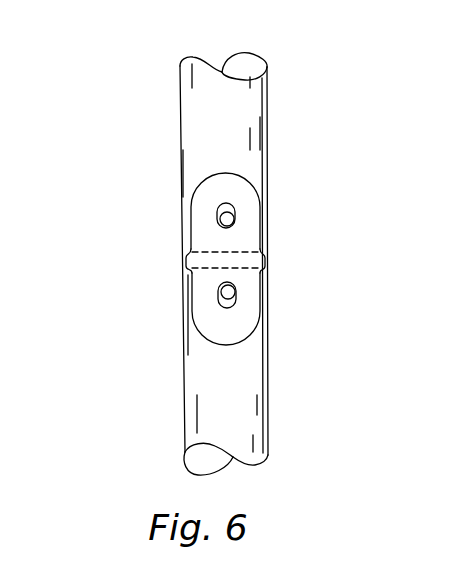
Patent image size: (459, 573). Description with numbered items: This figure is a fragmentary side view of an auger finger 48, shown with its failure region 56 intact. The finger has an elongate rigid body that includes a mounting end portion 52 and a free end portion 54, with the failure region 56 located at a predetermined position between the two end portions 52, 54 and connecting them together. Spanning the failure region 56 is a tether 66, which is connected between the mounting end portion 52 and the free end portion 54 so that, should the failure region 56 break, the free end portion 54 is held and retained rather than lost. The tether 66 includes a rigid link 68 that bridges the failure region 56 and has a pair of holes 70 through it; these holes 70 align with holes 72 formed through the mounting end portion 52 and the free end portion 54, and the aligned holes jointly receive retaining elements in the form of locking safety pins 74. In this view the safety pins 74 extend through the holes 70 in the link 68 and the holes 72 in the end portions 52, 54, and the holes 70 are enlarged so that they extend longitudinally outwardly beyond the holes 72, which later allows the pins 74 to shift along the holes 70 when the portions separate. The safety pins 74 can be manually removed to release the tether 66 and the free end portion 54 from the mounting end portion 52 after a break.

The auger finger 48 is at (268, 62).
The mounting end portion 52 is at (268, 112).
The free end portion 54 is at (268, 441).
The failure region 56 is at (267, 262).
The tether 66 is at (262, 209).
The rigid link 68 is at (192, 298).
The holes 70 is at (217, 210).
The holes 72 is at (218, 288).
The locking safety pins 74 is at (234, 225).